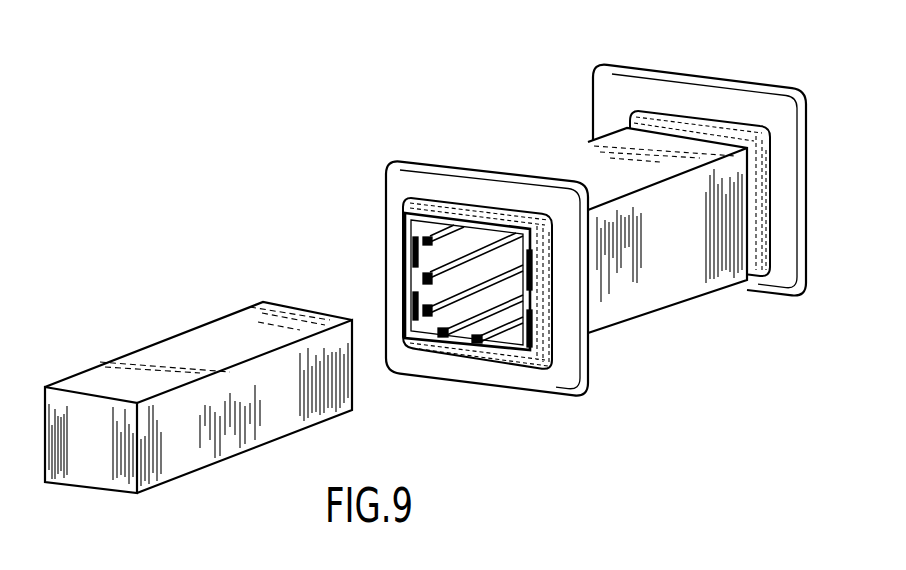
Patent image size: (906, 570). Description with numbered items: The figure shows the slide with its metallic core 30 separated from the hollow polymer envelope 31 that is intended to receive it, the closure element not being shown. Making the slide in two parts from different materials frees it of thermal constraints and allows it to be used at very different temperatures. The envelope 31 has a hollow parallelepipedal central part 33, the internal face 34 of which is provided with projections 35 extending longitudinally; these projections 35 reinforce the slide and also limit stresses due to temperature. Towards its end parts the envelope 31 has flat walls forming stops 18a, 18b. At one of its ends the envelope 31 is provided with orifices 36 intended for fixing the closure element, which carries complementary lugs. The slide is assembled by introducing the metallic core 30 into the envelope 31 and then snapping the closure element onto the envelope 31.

The stop 18a is at (428, 180).
The stop 18b is at (707, 94).
The metallic core 30 is at (167, 362).
The hollow polymer envelope 31 is at (597, 209).
The hollow parallelepipedal central part 33 is at (643, 281).
The internal face 34 is at (437, 250).
The projections 35 is at (467, 338).
The orifices 36 is at (540, 333).